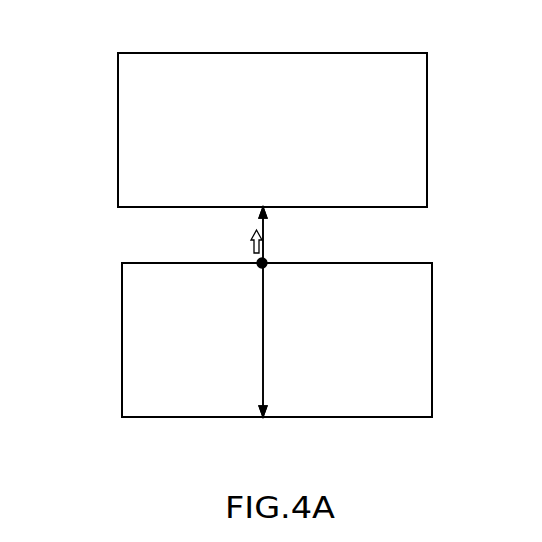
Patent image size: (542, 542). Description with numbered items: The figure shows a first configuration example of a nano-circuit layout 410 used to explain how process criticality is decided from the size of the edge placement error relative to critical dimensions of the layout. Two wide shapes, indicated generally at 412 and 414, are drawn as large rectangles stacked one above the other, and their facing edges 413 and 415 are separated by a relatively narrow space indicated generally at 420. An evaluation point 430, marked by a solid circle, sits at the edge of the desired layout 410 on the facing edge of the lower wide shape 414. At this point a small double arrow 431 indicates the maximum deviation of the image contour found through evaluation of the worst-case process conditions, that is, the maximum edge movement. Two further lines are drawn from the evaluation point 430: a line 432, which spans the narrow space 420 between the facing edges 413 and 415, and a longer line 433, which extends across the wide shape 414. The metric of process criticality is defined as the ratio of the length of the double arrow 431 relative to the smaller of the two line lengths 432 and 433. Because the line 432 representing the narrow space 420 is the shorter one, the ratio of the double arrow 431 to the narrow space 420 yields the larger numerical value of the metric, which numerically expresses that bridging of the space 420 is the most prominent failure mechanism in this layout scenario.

The layout 410 is at (69, 81).
The first wide shape 412 is at (427, 92).
The facing edge of first wide shape 413 is at (416, 208).
The second wide shape 414 is at (460, 318).
The facing edge of second wide shape 415 is at (413, 261).
The narrow space 420 is at (96, 247).
The evaluation point 430 is at (264, 262).
The double arrow 431 is at (251, 245).
The line representing narrow space 432 is at (264, 231).
The line 433 is at (263, 334).